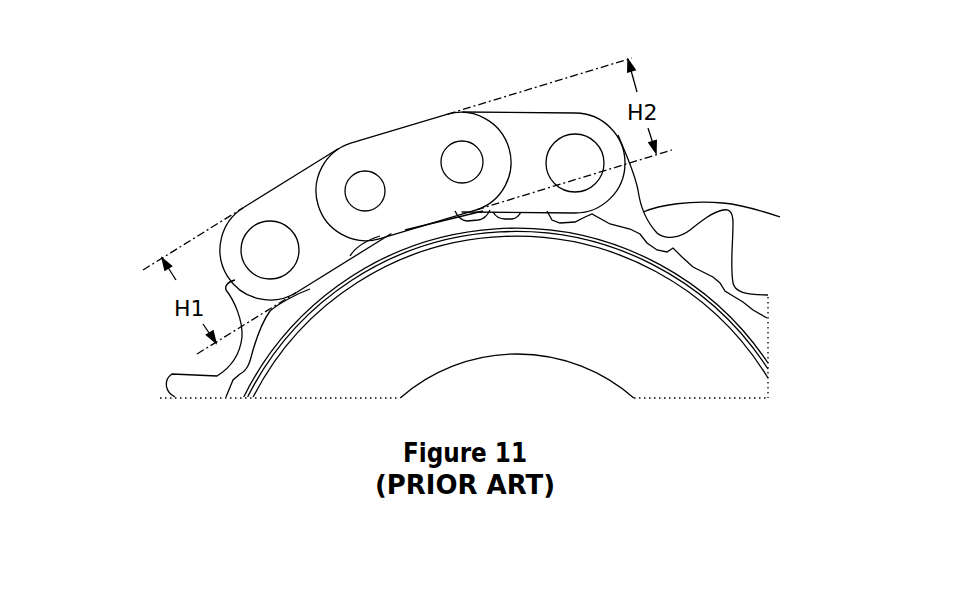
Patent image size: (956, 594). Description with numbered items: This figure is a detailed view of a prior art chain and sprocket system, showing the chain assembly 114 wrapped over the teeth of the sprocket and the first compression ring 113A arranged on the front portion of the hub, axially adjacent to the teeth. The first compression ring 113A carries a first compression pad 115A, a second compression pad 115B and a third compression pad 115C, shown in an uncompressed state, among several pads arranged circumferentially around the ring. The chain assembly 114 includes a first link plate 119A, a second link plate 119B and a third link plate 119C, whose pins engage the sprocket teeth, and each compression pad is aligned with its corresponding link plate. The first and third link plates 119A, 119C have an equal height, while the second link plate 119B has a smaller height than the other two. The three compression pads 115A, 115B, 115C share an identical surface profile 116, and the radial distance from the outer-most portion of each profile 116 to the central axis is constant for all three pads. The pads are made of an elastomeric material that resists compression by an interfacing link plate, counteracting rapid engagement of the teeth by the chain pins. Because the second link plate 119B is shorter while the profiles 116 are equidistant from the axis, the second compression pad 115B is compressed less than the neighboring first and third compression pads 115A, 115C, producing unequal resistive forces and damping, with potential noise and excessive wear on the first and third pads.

The chain assembly 114 is at (206, 226).
The first compression ring 113A is at (733, 288).
The surface profile 116 is at (362, 268).
The first compression pad 115A is at (318, 281).
The second compression pad 115B is at (417, 230).
The third compression pad 115C is at (512, 222).
The first link plate 119A is at (290, 197).
The second link plate 119B is at (430, 150).
The third link plate 119C is at (627, 237).